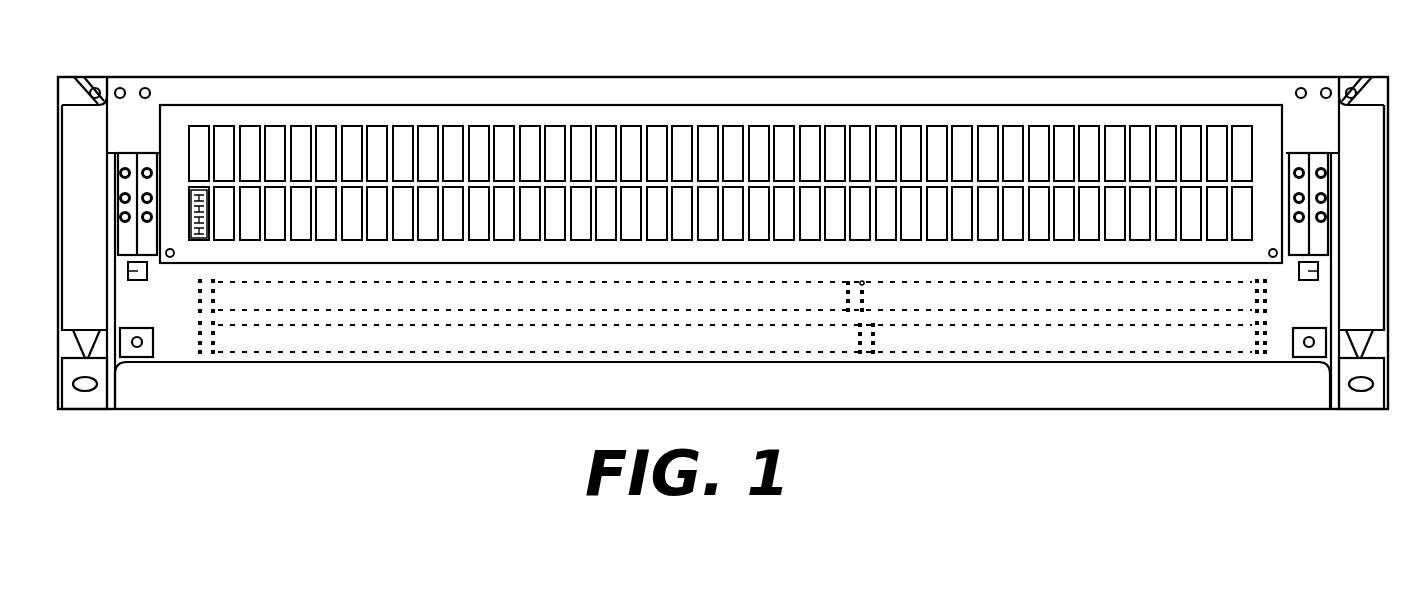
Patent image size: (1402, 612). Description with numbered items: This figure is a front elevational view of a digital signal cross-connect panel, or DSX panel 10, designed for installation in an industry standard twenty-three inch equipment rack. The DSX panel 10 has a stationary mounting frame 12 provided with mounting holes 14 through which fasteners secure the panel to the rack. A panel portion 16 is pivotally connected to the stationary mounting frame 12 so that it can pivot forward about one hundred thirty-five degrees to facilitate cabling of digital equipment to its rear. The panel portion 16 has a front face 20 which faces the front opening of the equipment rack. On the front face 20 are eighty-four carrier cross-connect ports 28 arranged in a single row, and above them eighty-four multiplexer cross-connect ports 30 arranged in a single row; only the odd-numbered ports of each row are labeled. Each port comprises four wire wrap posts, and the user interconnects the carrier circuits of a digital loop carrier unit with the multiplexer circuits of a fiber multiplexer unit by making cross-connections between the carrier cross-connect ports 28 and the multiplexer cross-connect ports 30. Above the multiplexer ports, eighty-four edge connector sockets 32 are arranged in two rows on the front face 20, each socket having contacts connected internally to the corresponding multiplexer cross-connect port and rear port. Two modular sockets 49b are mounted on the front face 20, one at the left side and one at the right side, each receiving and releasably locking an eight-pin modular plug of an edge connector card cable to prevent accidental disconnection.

The DSX panel 10 is at (1362, 58).
The stationary mounting frame 12 is at (1367, 203).
The mounting holes 14 is at (1357, 391).
The panel portion 16 is at (1240, 90).
The front face 20 is at (1172, 383).
The carrier cross-connect ports 28 is at (876, 343).
The multiplexer cross-connect ports 30 is at (866, 296).
The edge connector sockets 32 is at (398, 130).
The modular socket 49b is at (128, 271).